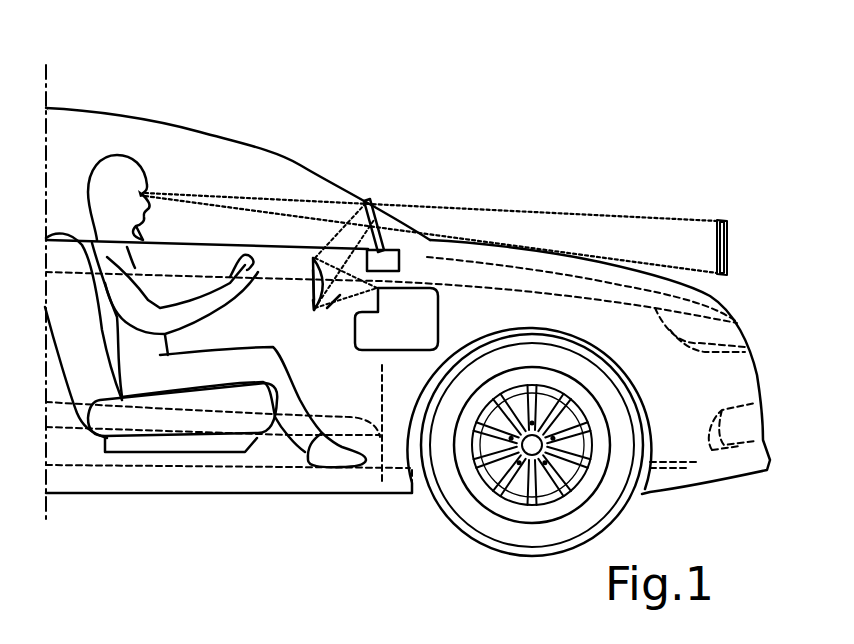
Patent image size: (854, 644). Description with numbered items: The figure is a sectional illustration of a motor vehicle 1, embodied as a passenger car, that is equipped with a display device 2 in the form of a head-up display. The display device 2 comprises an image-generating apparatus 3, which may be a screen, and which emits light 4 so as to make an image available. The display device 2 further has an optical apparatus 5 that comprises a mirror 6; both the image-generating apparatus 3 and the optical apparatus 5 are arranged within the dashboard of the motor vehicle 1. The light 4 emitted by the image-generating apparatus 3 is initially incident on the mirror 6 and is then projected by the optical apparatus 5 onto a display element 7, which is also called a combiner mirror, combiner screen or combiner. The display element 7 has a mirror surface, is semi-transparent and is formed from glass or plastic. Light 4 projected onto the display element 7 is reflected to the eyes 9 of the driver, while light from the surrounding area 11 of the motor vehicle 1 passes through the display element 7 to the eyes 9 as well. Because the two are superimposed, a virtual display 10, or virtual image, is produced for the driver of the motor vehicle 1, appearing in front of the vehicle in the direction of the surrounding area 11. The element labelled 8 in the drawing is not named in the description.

The motor vehicle 1 is at (283, 117).
The display device 2 is at (478, 197).
The image-generating apparatus 3 is at (423, 325).
The light 4 is at (317, 310).
The optical apparatus 5 is at (303, 263).
The mirror 6 is at (315, 283).
The display element 7 is at (386, 203).
The mirror mount / housing 8 is at (400, 257).
The eyes 9 is at (140, 188).
The virtual display 10 is at (727, 240).
The surrounding area 11 is at (672, 190).